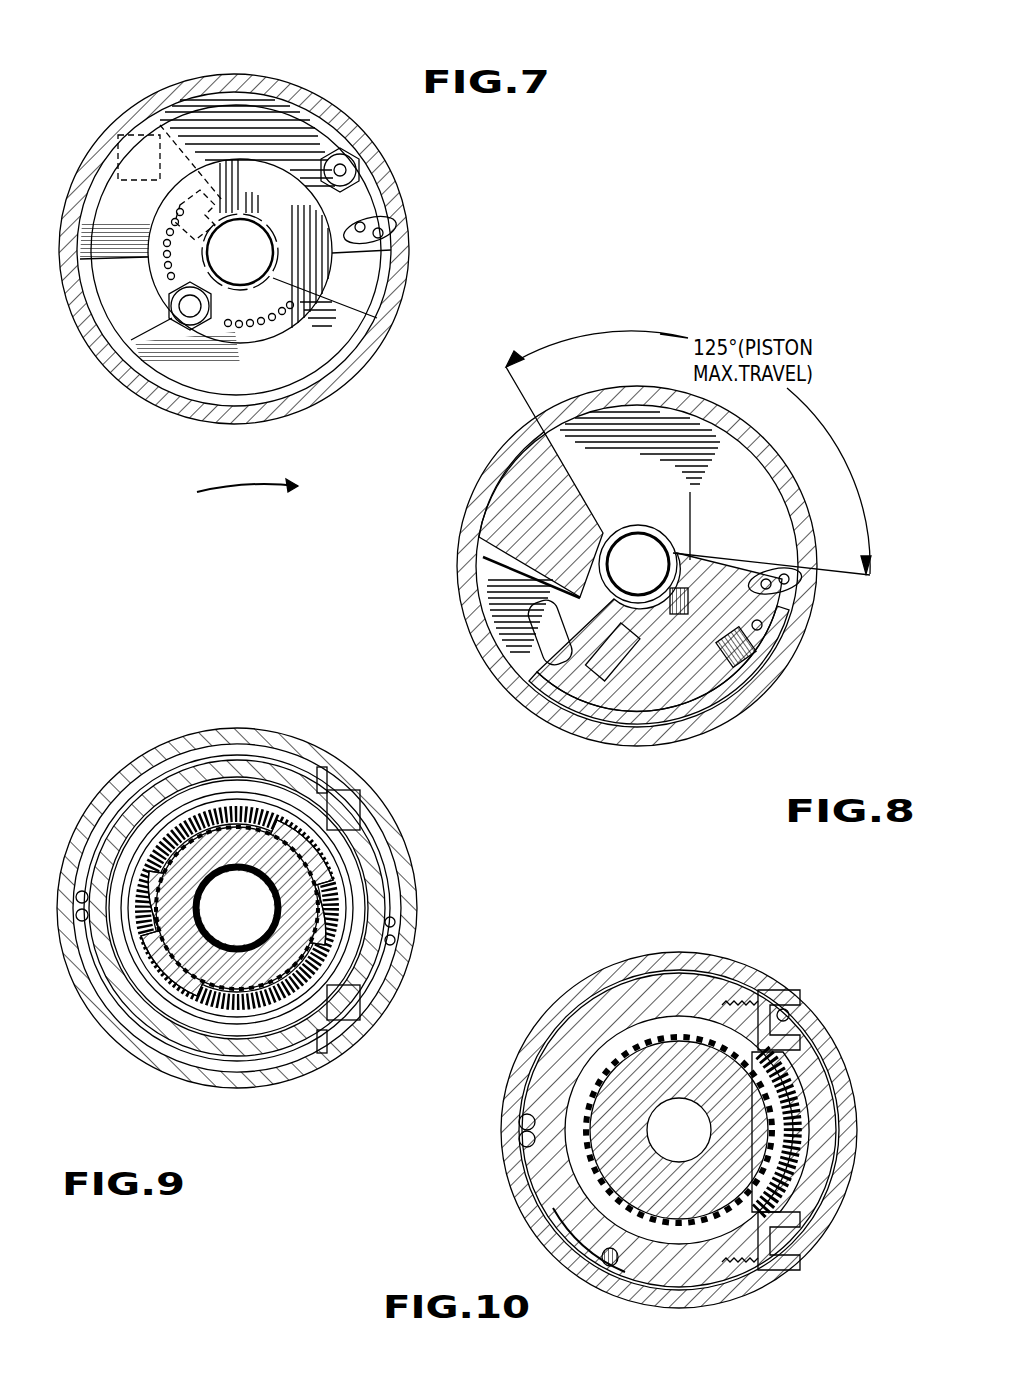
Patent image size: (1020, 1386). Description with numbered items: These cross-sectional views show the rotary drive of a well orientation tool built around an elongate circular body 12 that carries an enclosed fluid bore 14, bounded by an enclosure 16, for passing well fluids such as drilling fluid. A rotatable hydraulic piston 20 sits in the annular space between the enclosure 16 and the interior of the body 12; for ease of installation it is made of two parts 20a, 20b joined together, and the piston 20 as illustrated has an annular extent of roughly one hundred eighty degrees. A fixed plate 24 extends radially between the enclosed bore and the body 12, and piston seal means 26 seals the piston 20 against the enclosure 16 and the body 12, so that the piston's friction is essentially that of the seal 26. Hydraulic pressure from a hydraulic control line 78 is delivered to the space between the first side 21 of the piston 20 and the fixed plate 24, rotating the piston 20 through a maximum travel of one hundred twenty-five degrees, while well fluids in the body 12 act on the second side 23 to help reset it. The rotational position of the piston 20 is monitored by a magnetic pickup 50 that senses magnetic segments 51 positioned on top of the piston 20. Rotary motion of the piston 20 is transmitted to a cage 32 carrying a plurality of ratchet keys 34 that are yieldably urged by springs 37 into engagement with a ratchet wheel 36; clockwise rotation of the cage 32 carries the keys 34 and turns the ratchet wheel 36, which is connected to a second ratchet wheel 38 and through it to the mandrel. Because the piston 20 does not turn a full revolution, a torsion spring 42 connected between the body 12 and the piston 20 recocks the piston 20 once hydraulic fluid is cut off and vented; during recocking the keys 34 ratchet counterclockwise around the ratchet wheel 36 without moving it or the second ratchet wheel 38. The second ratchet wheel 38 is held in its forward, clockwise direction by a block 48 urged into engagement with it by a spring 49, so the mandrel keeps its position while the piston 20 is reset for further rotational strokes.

In FIG. 7, the body 12 is at (380, 330).
In FIG. 8, the body 12 is at (478, 652).
In FIG. 9, the body 12 is at (355, 1040).
In FIG. 10, the body 12 is at (618, 1303).
In FIG. 8, the fluid bore 14 is at (628, 547).
In FIG. 8, the enclosure 16 is at (675, 550).
In FIG. 7, the rotatable hydraulic piston 20 is at (110, 195).
In FIG. 8, the rotatable hydraulic piston 20 is at (603, 599).
In FIG. 8, the piston part 20a is at (518, 522).
In FIG. 8, the piston part 20b is at (688, 690).
In FIG. 8, the first side of the piston 21 is at (790, 600).
In FIG. 8, the second side of the piston 23 is at (545, 452).
In FIG. 7, the fixed plate 24 is at (395, 276).
In FIG. 8, the fixed plate 24 is at (792, 638).
In FIG. 8, the piston seal means 26 is at (758, 697).
In FIG. 9, the cage 32 is at (275, 997).
In FIG. 9, the ratchet keys 34 is at (320, 906).
In FIG. 9, the ratchet wheel 36 is at (195, 828).
In FIG. 9, the springs 37 is at (115, 832).
In FIG. 10, the second ratchet wheel 38 is at (690, 1225).
In FIG. 9, the torsion spring 42 is at (150, 988).
In FIG. 10, the block 48 is at (808, 1246).
In FIG. 10, the spring 49 is at (805, 1193).
In FIG. 7, the magnetic pickup 50 is at (178, 325).
In FIG. 7, the magnetic segments 51 is at (246, 328).
In FIG. 8, the hydraulic control line 78 is at (775, 655).